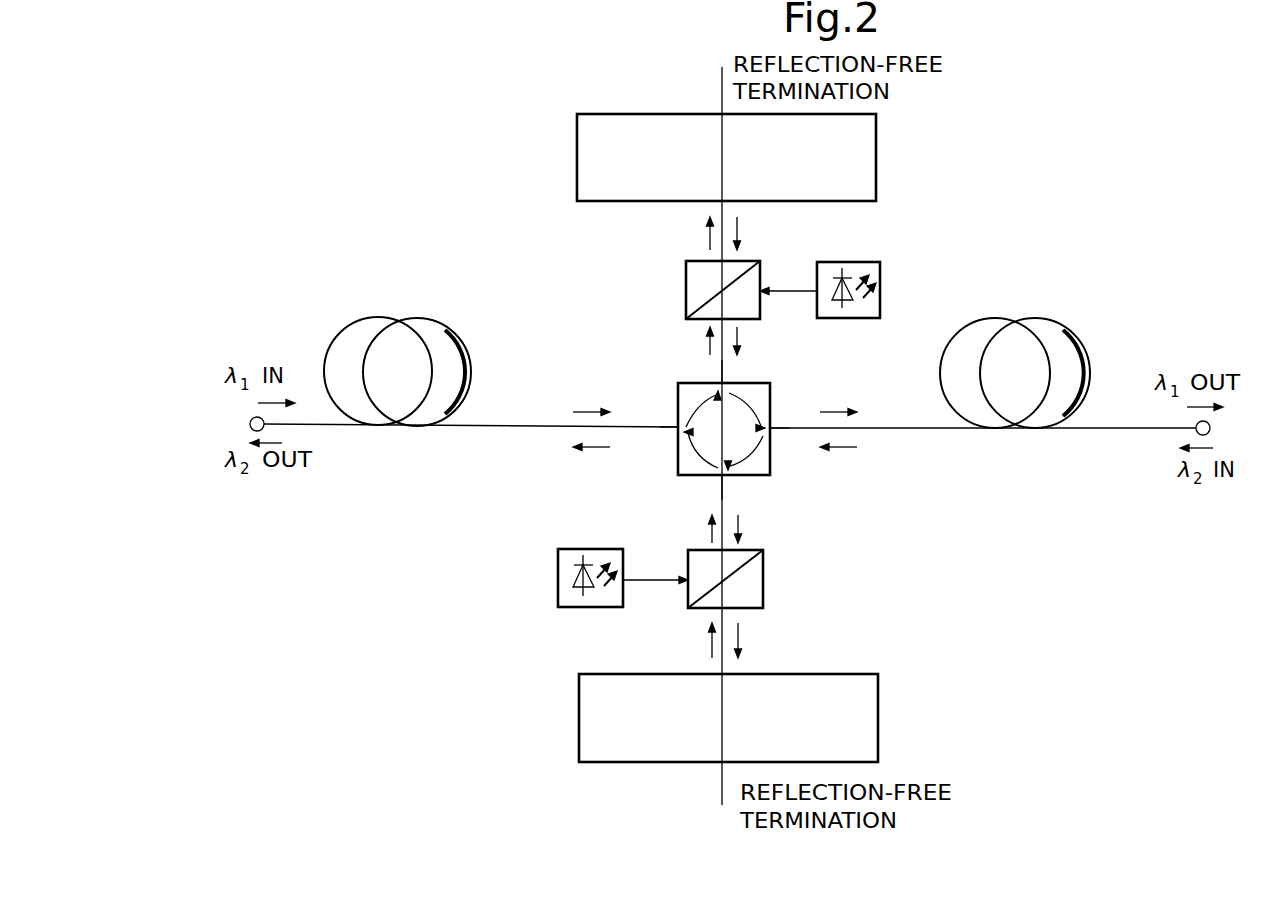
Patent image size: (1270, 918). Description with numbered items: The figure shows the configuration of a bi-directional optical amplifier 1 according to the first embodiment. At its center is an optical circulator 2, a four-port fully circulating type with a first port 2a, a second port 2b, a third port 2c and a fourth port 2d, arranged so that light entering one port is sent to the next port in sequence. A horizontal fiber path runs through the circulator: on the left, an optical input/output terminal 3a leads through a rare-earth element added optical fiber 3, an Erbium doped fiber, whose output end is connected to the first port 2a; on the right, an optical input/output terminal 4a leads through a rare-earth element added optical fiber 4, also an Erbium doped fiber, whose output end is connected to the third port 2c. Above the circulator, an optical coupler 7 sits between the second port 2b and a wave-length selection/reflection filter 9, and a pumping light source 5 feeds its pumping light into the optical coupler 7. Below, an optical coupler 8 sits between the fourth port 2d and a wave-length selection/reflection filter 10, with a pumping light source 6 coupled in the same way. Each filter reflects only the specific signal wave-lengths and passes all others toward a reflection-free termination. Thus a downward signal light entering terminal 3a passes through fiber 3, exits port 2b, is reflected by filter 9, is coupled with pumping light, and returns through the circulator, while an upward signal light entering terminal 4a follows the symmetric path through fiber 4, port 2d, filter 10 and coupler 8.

The bi-directional optical amplifier 1 is at (997, 105).
The optical circulator 2 is at (678, 383).
The first port 2a is at (660, 412).
The second port 2b is at (705, 370).
The third port 2c is at (787, 413).
The fourth port 2d is at (741, 491).
The rare-earth element added optical fiber 3 is at (353, 318).
The optical input/output terminal 3a is at (238, 424).
The rare-earth element added optical fiber 4 is at (1040, 320).
The optical input/output terminal 4a is at (1227, 429).
The pumping light source 5 is at (850, 262).
The pumping light source 6 is at (558, 572).
The optical coupler 7 is at (686, 283).
The optical coupler 8 is at (764, 578).
The wave-length selection/reflection filter 9 is at (877, 157).
The wave-length selection/reflection filter 10 is at (878, 712).